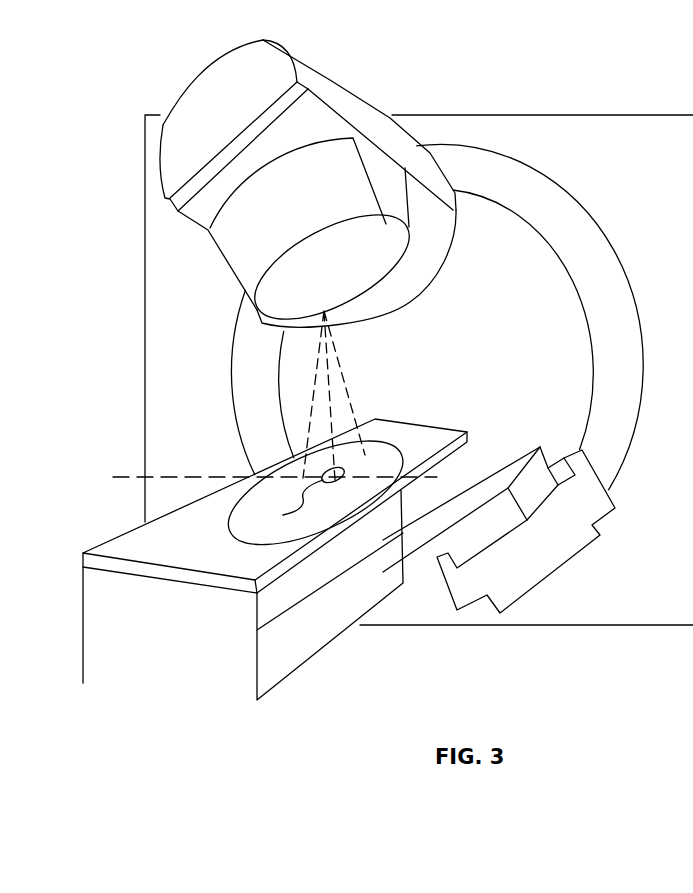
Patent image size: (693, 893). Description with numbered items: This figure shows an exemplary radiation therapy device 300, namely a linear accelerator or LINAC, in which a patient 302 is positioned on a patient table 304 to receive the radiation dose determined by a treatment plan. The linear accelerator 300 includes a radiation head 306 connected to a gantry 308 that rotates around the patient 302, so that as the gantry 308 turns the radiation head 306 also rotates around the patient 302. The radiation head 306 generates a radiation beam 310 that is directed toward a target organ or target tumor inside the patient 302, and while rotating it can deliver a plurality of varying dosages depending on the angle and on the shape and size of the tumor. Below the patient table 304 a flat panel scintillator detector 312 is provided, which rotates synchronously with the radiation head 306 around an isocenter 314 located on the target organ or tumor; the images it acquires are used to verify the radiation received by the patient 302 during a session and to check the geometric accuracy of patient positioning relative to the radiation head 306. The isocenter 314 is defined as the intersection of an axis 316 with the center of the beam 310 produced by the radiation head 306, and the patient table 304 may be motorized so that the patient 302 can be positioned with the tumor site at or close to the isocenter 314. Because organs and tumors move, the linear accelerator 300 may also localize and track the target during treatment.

The radiation therapy device 300 is at (560, 74).
The patient 302 is at (253, 503).
The patient table 304 is at (440, 440).
The radiation head 306 is at (232, 273).
The gantry 308 is at (576, 201).
The radiation beam 310 is at (340, 383).
The flat panel scintillator detector 312 is at (510, 472).
The isocenter 314 is at (302, 498).
The axis 316 is at (130, 477).